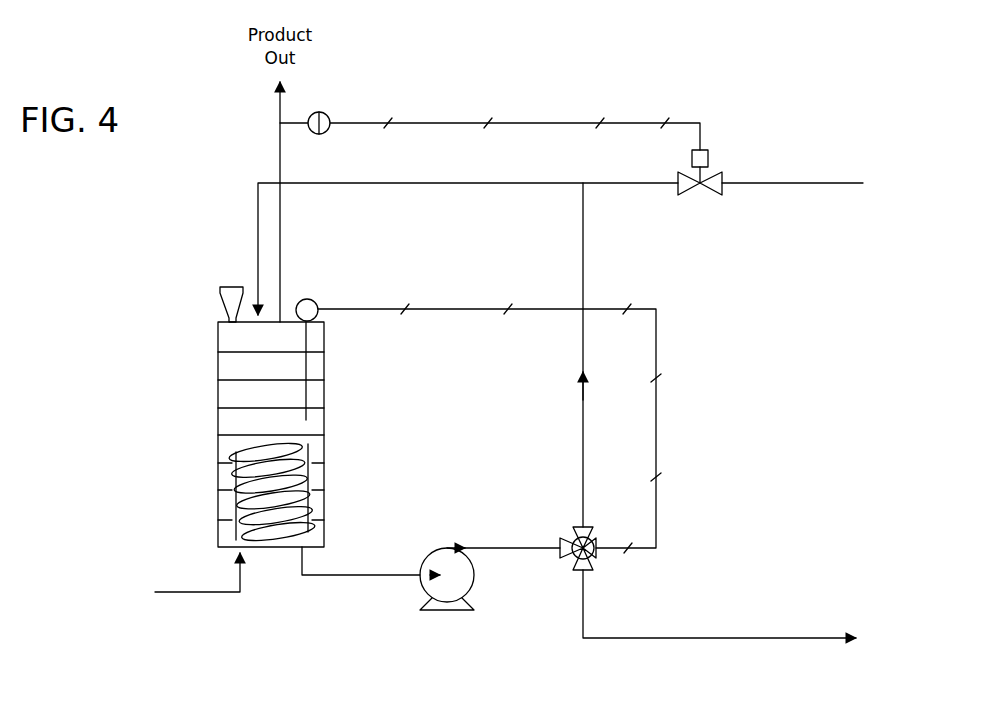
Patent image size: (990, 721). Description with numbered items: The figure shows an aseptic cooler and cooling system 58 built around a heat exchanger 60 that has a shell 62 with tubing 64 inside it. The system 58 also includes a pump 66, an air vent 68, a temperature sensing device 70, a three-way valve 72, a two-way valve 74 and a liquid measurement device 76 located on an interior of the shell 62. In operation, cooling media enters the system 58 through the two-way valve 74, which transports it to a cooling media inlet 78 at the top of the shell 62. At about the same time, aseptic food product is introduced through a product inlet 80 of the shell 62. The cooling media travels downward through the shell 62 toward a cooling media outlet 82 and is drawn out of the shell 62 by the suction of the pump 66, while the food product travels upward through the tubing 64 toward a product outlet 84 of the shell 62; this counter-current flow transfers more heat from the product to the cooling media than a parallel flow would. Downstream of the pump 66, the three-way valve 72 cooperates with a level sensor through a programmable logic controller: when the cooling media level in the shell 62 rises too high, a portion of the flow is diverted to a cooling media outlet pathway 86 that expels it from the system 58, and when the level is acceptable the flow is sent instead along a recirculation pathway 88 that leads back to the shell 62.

The system 58 is at (787, 73).
The heat exchanger 60 is at (228, 434).
The shell 62 is at (218, 447).
The tubing 64 is at (218, 497).
The pump 66 is at (445, 592).
The air vent 68 is at (230, 286).
The temperature sensing device 70 is at (327, 113).
The three-way valve 72 is at (580, 527).
The two-way valve 74 is at (705, 195).
The liquid measurement device 76 is at (316, 318).
The cooling media inlet 78 is at (268, 322).
The product inlet 80 is at (228, 554).
The cooling media outlet 82 is at (289, 560).
The product outlet 84 is at (292, 322).
The cooling media outlet pathway 86 is at (740, 638).
The recirculation pathway 88 is at (584, 425).